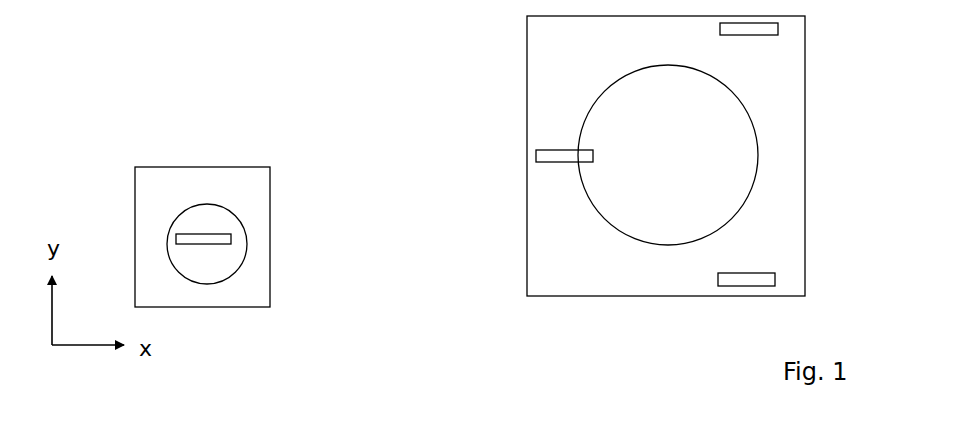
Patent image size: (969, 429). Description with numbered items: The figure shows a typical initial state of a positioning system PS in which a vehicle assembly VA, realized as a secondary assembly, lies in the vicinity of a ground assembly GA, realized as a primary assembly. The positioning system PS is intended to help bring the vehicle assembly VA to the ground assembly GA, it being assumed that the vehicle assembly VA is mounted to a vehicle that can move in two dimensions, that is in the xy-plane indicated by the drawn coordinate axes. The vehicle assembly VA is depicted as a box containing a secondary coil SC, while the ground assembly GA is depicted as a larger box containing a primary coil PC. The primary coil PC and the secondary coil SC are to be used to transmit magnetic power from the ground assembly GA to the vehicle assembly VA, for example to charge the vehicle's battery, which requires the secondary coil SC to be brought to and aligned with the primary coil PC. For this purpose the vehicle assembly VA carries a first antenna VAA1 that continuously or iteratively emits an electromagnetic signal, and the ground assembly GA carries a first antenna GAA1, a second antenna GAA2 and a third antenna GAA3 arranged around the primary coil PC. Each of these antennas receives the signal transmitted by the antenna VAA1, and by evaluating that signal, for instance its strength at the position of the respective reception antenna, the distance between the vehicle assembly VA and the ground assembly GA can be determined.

The positioning system PS is at (158, 74).
The vehicle assembly VA is at (270, 294).
The first antenna VAA1 is at (181, 234).
The secondary coil SC is at (228, 281).
The ground assembly GA is at (527, 278).
The first antenna GAA1 is at (545, 150).
The second antenna GAA2 is at (735, 36).
The third antenna GAA3 is at (744, 286).
The primary coil PC is at (648, 245).